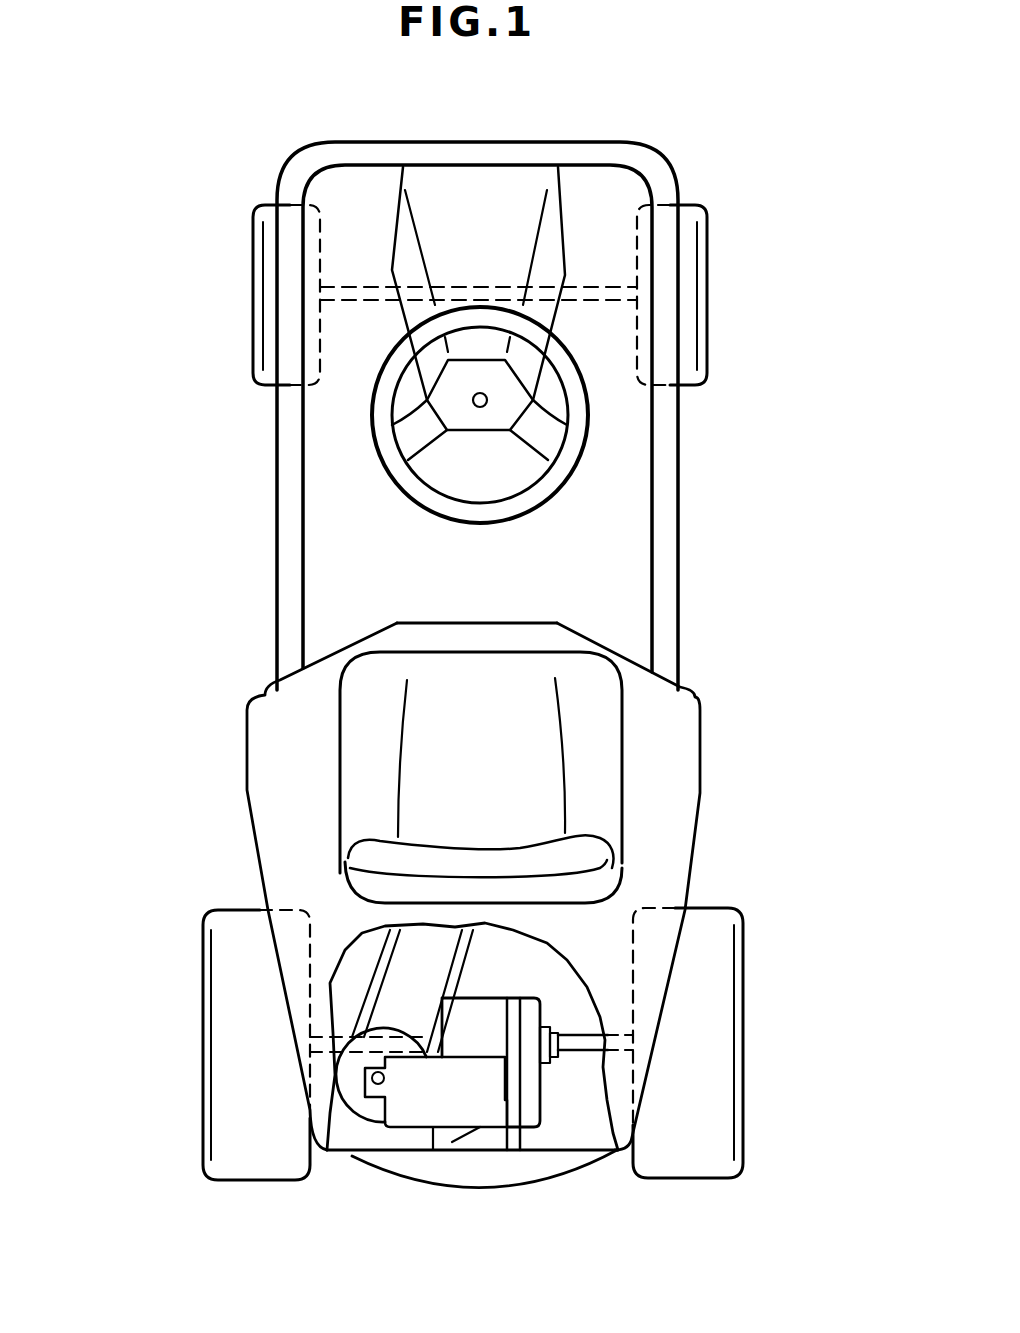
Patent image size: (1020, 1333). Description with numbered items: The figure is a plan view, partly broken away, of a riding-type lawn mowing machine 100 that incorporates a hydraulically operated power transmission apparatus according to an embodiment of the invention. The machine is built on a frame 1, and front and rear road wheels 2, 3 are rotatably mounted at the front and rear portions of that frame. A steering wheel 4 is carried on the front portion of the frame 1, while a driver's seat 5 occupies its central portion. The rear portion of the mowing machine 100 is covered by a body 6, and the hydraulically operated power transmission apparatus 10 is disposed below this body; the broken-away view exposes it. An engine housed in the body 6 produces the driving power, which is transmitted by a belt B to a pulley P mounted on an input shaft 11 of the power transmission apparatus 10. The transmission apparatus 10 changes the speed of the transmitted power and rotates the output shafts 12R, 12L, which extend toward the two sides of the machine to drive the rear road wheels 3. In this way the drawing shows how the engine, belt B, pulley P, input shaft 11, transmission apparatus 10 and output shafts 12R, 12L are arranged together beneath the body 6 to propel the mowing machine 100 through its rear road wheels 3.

The riding-type lawn mowing machine 100 is at (700, 173).
The frame 1 is at (680, 614).
The front road wheels 2 is at (251, 246).
The rear road wheels 3 is at (200, 1017).
The steering wheel 4 is at (547, 498).
The driver's seat 5 is at (622, 750).
The body 6 is at (700, 858).
The hydraulically operated power transmission apparatus 10 is at (427, 1147).
The input shaft 11 is at (384, 1079).
The left output shaft 12L is at (330, 1025).
The right output shaft 12R is at (580, 1042).
The belt B is at (462, 950).
The pulley P is at (363, 1117).